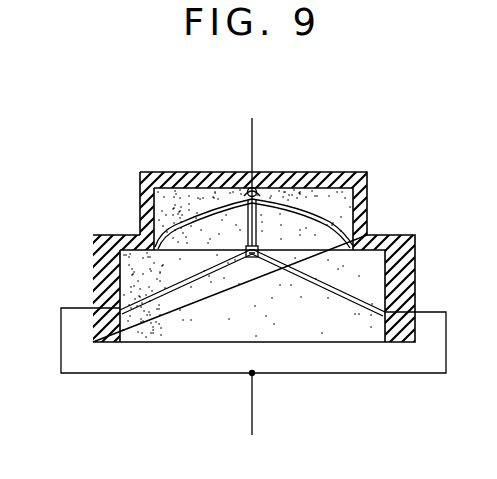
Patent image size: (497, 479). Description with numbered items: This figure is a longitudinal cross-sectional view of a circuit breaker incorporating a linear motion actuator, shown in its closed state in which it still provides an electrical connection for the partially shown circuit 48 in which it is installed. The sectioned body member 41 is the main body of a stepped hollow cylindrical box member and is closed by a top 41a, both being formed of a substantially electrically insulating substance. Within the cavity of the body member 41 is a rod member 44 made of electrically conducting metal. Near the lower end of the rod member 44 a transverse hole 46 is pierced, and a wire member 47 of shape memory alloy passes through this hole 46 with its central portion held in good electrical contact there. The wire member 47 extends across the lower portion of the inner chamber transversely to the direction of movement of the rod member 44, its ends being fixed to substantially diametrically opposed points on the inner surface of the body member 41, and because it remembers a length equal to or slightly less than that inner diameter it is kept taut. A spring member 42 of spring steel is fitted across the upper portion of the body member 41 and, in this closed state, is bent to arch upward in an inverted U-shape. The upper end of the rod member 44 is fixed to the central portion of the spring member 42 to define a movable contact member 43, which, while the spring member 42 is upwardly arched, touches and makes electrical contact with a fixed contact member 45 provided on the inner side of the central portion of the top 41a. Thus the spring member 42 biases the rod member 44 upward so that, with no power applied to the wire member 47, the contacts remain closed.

The body member 41 is at (93, 282).
The top 41a is at (324, 173).
The spring member 42 is at (163, 213).
The movable contact member 43 is at (243, 212).
The rod member 44 is at (256, 259).
The fixed contact member 45 is at (264, 196).
The transverse hole 46 is at (246, 258).
The wire member 47 is at (183, 283).
The circuit 48 is at (251, 144).